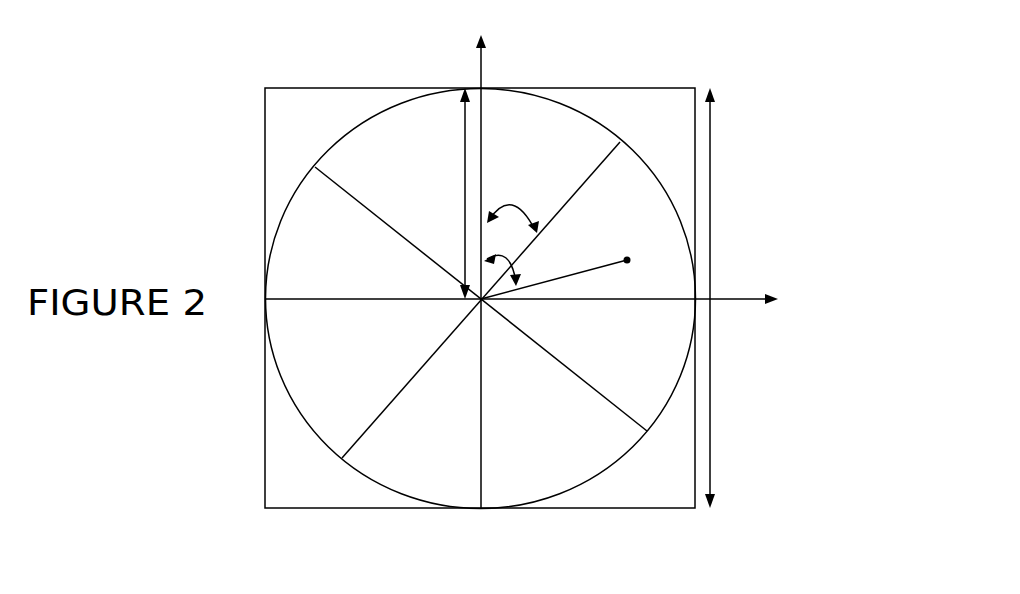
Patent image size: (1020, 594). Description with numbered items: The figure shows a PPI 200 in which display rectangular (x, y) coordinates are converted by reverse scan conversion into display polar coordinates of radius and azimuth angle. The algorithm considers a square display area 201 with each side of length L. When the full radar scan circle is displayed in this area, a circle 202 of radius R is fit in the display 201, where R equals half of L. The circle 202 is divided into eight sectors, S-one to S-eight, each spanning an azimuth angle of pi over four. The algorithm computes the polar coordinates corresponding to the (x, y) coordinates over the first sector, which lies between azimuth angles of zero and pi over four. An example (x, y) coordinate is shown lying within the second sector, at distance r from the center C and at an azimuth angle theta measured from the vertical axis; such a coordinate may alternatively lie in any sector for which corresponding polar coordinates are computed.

The PPI 200 is at (645, 60).
The square display area 201 is at (557, 509).
The circle 202 is at (688, 352).